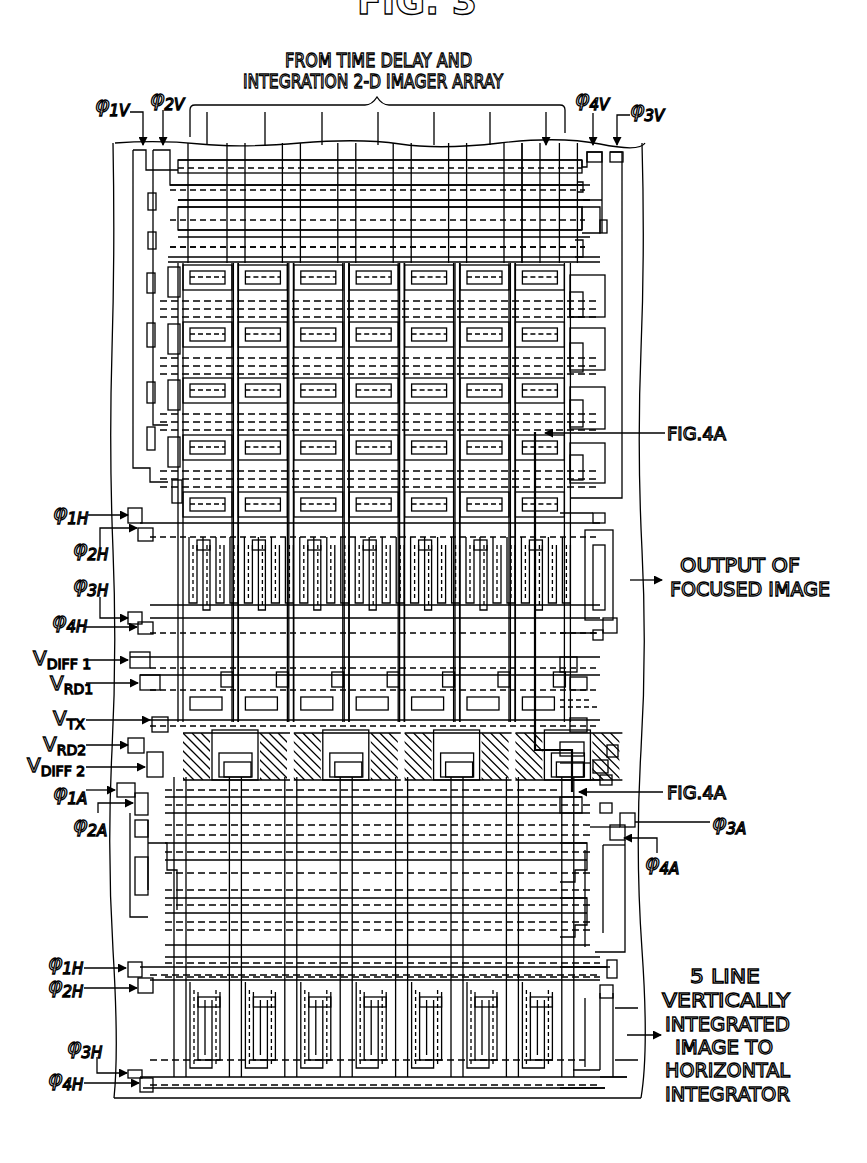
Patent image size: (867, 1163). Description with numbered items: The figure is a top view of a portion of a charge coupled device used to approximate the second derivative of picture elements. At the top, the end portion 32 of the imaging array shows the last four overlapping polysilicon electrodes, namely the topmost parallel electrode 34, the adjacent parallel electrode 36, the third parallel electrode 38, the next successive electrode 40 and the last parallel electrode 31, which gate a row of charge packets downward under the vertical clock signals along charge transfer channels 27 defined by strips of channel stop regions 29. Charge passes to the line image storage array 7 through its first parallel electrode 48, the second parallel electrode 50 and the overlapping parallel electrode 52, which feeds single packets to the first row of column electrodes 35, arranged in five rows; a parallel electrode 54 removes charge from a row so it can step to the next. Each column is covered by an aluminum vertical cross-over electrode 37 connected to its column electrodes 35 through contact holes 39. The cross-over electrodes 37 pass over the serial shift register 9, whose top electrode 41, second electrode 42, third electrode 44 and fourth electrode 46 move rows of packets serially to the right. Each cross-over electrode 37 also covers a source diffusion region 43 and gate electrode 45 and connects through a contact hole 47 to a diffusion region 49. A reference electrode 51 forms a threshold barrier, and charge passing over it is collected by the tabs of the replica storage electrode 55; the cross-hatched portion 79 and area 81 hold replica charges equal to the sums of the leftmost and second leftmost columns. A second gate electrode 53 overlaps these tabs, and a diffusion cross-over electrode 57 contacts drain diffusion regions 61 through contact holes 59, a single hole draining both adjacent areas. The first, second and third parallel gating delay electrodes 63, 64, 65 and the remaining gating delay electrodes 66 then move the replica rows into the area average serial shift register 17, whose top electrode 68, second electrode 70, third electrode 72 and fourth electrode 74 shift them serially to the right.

The line image storage array 7 is at (105, 150).
The serial shift register 9 is at (53, 500).
The area average serial shift register 17 is at (57, 942).
The charge transfer channel 27 is at (537, 150).
The channel stop region 29 is at (517, 150).
The last parallel electrode of the imaging array 31 is at (600, 232).
The end portion of the imaging array 32 is at (100, 143).
The topmost parallel electrode 34 is at (582, 168).
The column electrode 35 is at (578, 293).
The adjacent overlapping parallel electrode 36 is at (583, 186).
The vertical cross-over electrode 37 is at (567, 365).
The third parallel electrode 38 is at (590, 203).
The contact hole 39 is at (557, 393).
The next successive electrode 40 is at (603, 213).
The top electrode of the shift register 41 is at (593, 517).
The second electrode 42 is at (603, 533).
The source diffusion region 43 is at (570, 662).
The third electrode 44 is at (617, 627).
The gate electrode 45 is at (585, 685).
The fourth electrode 46 is at (597, 640).
The contact hole 47 is at (573, 707).
The first parallel electrode of the line image storage array 48 is at (585, 247).
The diffusion region 49 is at (585, 700).
The second parallel electrode 50 is at (566, 281).
The reference electrode 51 is at (585, 727).
The overlapping parallel electrode 52 is at (583, 299).
The second gate electrode 53 is at (605, 740).
The parallel electrode 54 is at (593, 322).
The replica storage electrode 55 is at (620, 781).
The diffusion cross-over electrode 57 is at (603, 768).
The contact hole 59 is at (610, 750).
The drain diffusion region 61 is at (613, 763).
The first parallel gating delay electrode 63 is at (607, 808).
The second parallel gating delay electrode 64 is at (638, 827).
The third parallel gating delay electrode 65 is at (610, 842).
The remaining parallel gating delay electrodes 66 is at (95, 947).
The top electrode of the shift register 68 is at (615, 967).
The second electrode 70 is at (607, 990).
The third electrode 72 is at (620, 1085).
The fourth electrode 74 is at (593, 1087).
The cross-hatched portion of the replica storage electrode 79 is at (197, 737).
The cross-hatched area of the replica storage electrode 81 is at (285, 778).